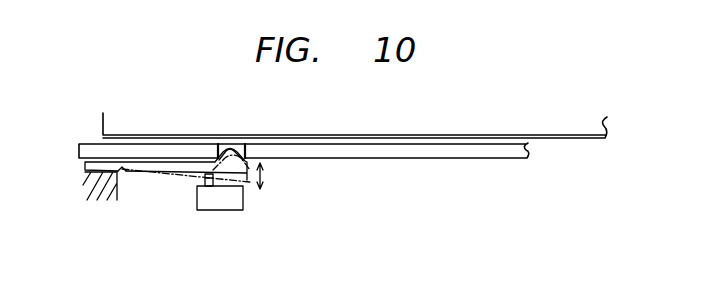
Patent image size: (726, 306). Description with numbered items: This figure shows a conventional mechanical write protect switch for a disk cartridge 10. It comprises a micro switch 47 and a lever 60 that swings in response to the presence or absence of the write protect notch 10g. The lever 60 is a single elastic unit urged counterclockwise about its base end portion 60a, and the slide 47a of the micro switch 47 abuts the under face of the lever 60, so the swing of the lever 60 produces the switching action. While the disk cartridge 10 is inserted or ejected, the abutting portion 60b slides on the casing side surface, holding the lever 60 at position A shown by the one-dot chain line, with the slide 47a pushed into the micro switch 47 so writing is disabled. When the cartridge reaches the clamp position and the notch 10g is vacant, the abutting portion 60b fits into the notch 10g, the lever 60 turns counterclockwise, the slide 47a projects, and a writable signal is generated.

The disk cartridge 10 is at (437, 159).
The write protect notch 10g is at (219, 146).
The lever 60 is at (172, 162).
The base end portion 60a is at (122, 174).
The abutting portion 60b is at (237, 143).
The micro switch 47 is at (222, 211).
The slide 47a is at (201, 183).
The position A is at (250, 178).